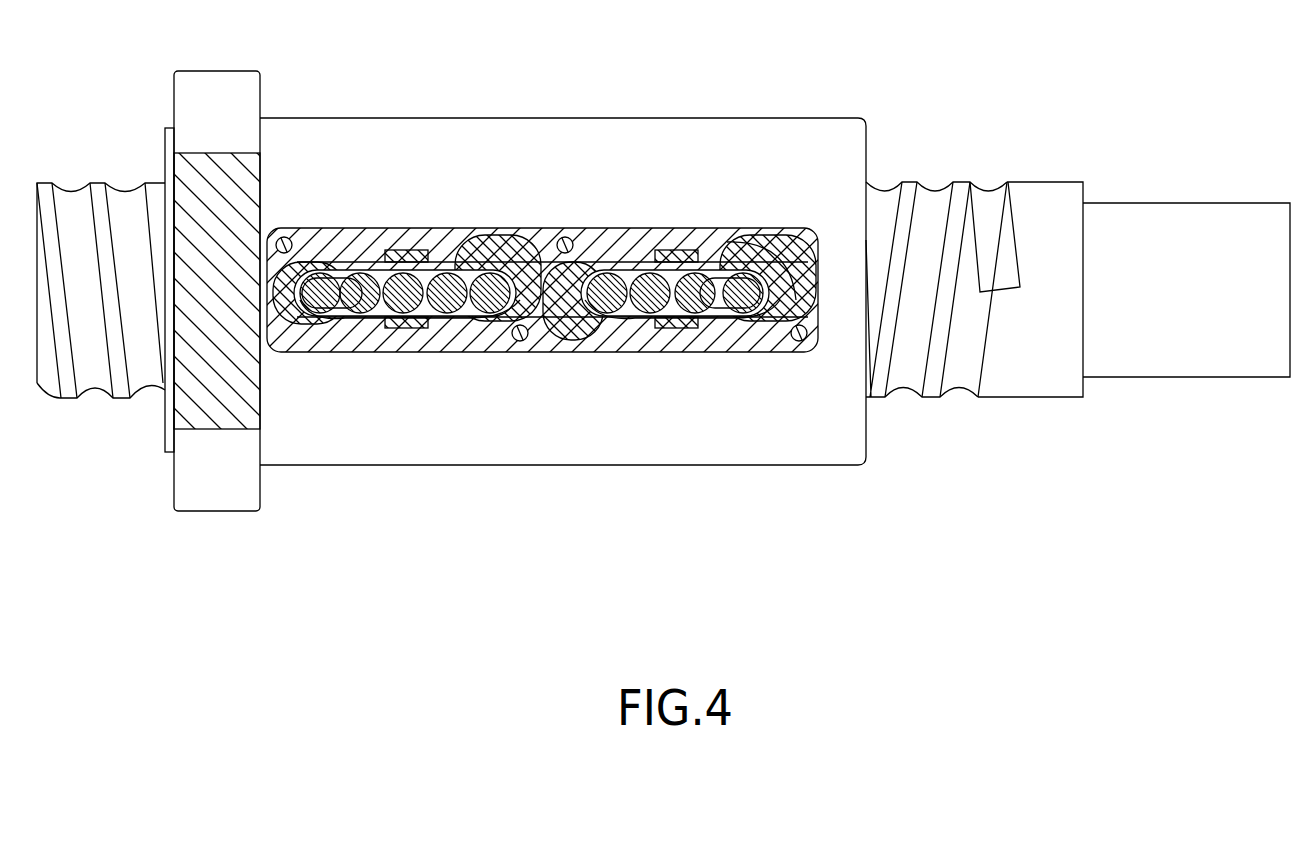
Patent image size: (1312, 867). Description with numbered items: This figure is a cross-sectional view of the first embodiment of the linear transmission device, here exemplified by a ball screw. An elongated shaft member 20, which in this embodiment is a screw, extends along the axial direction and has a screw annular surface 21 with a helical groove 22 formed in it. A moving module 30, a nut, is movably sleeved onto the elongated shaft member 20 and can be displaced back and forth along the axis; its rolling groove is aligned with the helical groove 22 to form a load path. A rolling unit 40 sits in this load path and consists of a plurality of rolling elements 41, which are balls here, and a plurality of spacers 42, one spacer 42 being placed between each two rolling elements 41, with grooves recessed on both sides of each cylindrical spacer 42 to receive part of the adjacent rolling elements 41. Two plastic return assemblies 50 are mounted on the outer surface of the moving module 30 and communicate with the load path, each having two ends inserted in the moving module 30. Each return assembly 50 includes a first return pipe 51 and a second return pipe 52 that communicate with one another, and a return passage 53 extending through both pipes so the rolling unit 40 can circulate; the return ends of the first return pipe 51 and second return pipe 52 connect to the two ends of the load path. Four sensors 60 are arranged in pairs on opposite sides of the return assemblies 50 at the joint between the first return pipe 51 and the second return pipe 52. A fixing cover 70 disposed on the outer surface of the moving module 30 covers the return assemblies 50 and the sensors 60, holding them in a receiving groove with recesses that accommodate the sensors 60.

The elongated shaft member 20 is at (663, 234).
The screw annular surface 21 is at (1048, 200).
The helical groove 22 is at (993, 218).
The moving module 30 is at (742, 112).
The rolling unit 40 is at (543, 239).
The rolling elements 41 is at (690, 270).
The spacers 42 is at (733, 228).
The return assemblies 50 is at (548, 293).
The first return pipe 51 is at (612, 320).
The second return pipe 52 is at (748, 316).
The return passage 53 is at (773, 320).
The sensors 60 is at (655, 251).
The fixing cover 70 is at (542, 247).